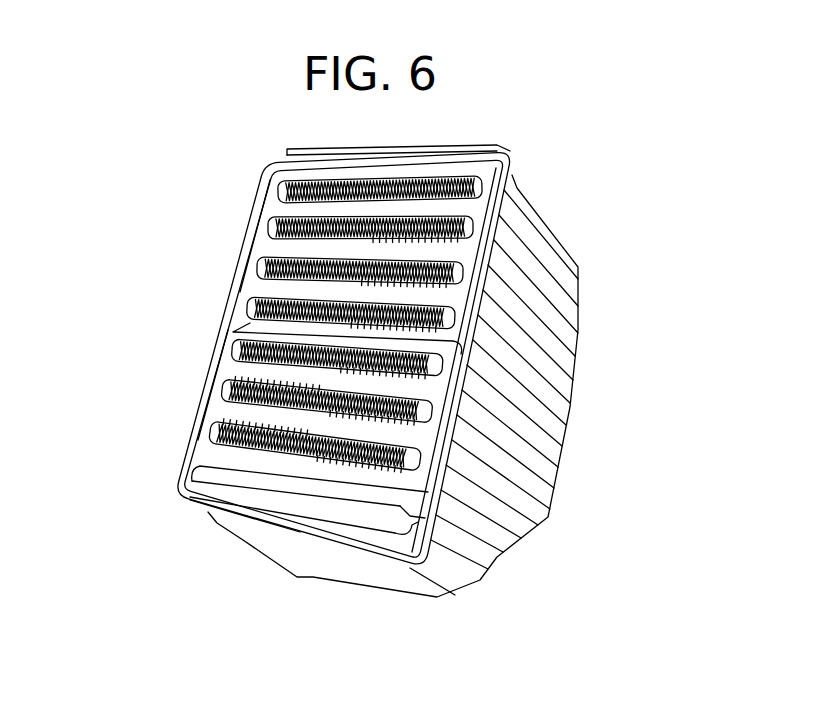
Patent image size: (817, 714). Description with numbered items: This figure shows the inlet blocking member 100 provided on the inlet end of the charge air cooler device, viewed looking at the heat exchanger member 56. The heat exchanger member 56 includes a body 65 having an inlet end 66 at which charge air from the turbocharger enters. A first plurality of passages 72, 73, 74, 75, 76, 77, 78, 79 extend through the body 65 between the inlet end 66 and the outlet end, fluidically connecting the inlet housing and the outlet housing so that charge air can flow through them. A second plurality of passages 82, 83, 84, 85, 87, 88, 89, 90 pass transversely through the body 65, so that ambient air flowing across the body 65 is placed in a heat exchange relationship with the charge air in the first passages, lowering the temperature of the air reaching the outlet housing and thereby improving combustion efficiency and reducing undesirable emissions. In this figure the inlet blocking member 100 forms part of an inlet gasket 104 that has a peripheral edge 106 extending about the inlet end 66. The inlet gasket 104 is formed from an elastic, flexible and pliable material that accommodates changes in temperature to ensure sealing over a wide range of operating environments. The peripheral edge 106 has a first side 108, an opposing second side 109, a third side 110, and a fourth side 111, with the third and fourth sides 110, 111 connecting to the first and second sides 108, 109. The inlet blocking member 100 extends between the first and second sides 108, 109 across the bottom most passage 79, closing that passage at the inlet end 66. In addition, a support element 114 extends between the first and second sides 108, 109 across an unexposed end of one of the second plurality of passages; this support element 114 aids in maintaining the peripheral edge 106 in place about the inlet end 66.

The heat exchanger member 56 is at (684, 311).
The body 65 is at (532, 157).
The inlet end 66 is at (268, 176).
The passage 72 is at (404, 188).
The passage 73 is at (405, 230).
The passage 74 is at (400, 274).
The passage 75 is at (387, 364).
The passage 76 is at (473, 402).
The passage 77 is at (360, 446).
The passage 78 is at (453, 483).
The bottom most passage 79 is at (350, 488).
The passage 82 is at (415, 176).
The passage 83 is at (283, 210).
The passage 84 is at (270, 248).
The passage 85 is at (257, 290).
The passage 87 is at (233, 370).
The passage 88 is at (222, 412).
The passage 89 is at (210, 453).
The passage 90 is at (320, 522).
The inlet blocking member 100 is at (198, 474).
The inlet gasket 104 is at (218, 254).
The peripheral edge 106 is at (391, 407).
The first side 108 is at (210, 383).
The second side 109 is at (548, 362).
The third side 110 is at (318, 164).
The fourth side 111 is at (210, 513).
The support element 114 is at (253, 325).